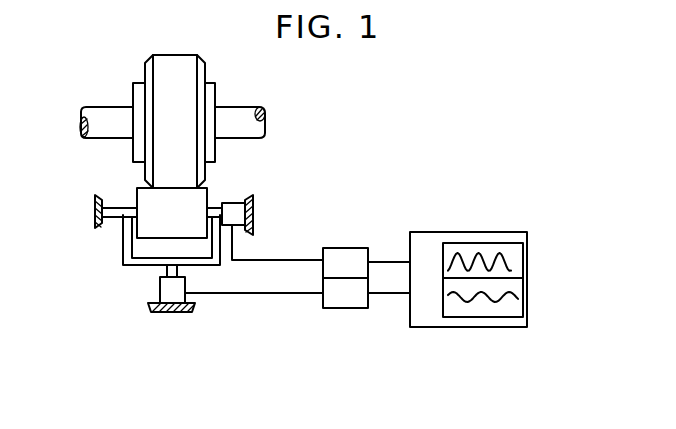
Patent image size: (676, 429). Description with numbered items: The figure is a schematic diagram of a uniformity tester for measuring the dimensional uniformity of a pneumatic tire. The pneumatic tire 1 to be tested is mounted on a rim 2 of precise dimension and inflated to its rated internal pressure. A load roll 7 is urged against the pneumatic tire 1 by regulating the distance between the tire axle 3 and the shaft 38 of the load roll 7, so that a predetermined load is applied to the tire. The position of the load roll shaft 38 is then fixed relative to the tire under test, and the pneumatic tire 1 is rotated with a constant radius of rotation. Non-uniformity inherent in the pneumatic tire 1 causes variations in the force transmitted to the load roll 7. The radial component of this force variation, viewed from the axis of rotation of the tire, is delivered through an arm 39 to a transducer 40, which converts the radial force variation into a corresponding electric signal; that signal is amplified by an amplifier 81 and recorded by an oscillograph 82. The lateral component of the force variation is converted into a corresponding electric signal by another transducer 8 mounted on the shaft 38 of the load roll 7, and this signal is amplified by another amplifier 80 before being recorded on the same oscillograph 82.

The pneumatic tire 1 is at (188, 63).
The rim 2 is at (215, 92).
The tire axle 3 is at (241, 137).
The load roll 7 is at (204, 196).
The transducer 8 is at (253, 213).
The shaft 38 is at (114, 217).
The arm 39 is at (133, 262).
The transducer 40 is at (176, 293).
The amplifier 80 is at (341, 253).
The amplifier 81 is at (337, 302).
The oscillograph 82 is at (491, 323).